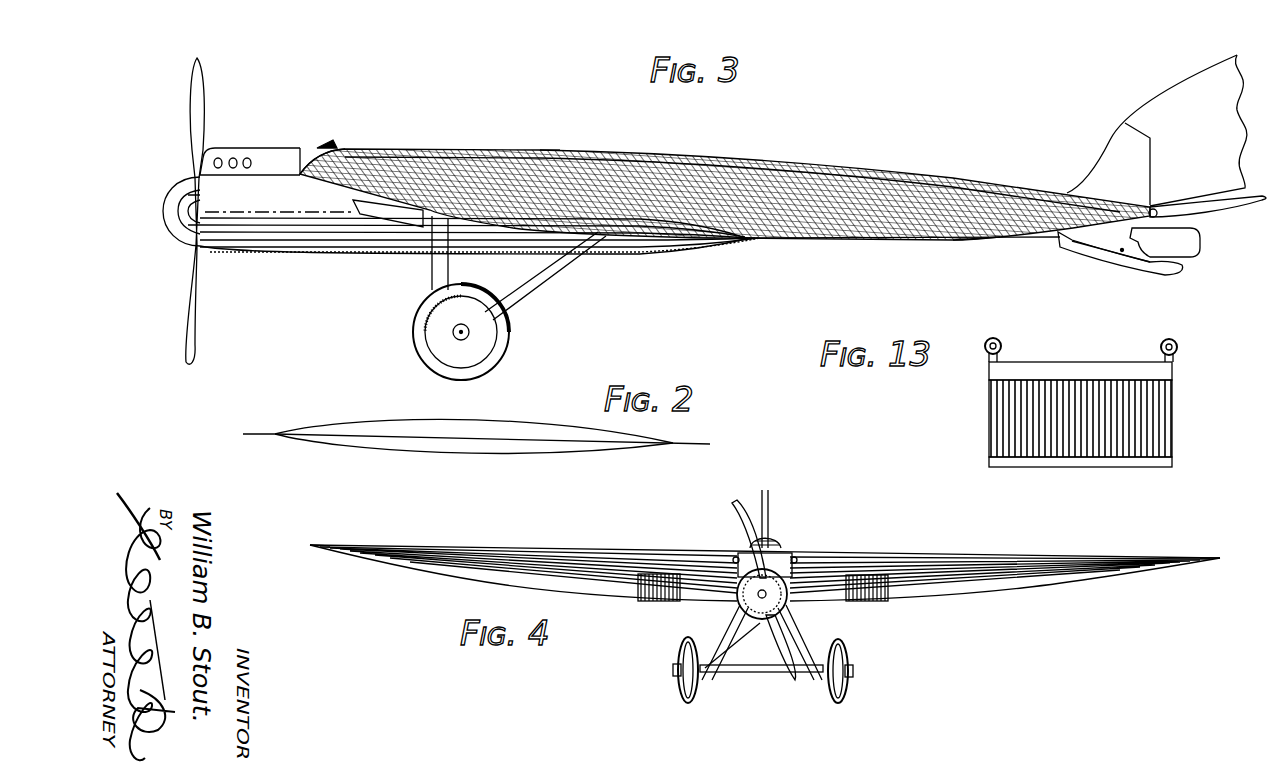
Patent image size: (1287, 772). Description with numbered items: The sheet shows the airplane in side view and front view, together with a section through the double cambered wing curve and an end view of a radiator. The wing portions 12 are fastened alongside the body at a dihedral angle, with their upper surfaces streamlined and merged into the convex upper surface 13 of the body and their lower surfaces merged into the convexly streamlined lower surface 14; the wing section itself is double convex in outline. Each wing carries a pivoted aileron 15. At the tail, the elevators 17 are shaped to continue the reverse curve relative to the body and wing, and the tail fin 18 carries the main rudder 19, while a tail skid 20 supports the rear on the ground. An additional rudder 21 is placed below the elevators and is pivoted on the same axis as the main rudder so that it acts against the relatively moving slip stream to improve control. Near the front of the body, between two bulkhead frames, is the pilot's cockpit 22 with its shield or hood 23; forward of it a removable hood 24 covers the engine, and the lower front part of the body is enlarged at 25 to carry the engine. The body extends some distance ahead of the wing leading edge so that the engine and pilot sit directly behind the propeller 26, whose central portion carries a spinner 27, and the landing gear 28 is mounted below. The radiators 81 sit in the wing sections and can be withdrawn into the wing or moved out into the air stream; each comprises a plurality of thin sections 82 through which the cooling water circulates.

In FIG. 4, the wing portions 12 is at (568, 530).
In FIG. 3, the upper surface of the body portion 13 is at (940, 180).
In FIG. 3, the lower surface of the body portion 14 is at (972, 238).
In FIG. 3, the aileron 15 is at (567, 150).
In FIG. 4, the aileron 15 is at (335, 548).
In FIG. 3, the elevators 17 is at (1218, 212).
In FIG. 3, the tail fin 18 is at (1108, 148).
In FIG. 3, the main rudder 19 is at (1246, 95).
In FIG. 4, the main rudder 19 is at (770, 512).
In FIG. 3, the tail skid 20 is at (1112, 266).
In FIG. 3, the additional rudder 21 is at (1197, 254).
In FIG. 3, the pilot's cockpit 22 is at (350, 150).
In FIG. 3, the shield or hood 23 is at (330, 144).
In FIG. 4, the shield or hood 23 is at (782, 544).
In FIG. 3, the removable hood 24 is at (273, 150).
In FIG. 4, the removable hood 24 is at (790, 562).
In FIG. 3, the enlarged lower part of the body portion 25 is at (611, 214).
In FIG. 3, the propeller 26 is at (208, 82).
In FIG. 4, the propeller 26 is at (730, 506).
In FIG. 3, the spinner 27 is at (180, 178).
In FIG. 4, the spinner 27 is at (740, 600).
In FIG. 3, the landing gear 28 is at (505, 320).
In FIG. 4, the landing gear 28 is at (845, 648).
In FIG. 3, the radiators 81 is at (390, 212).
In FIG. 4, the radiators 81 is at (658, 599).
In FIG. 13, the thin sections 82 is at (1000, 410).